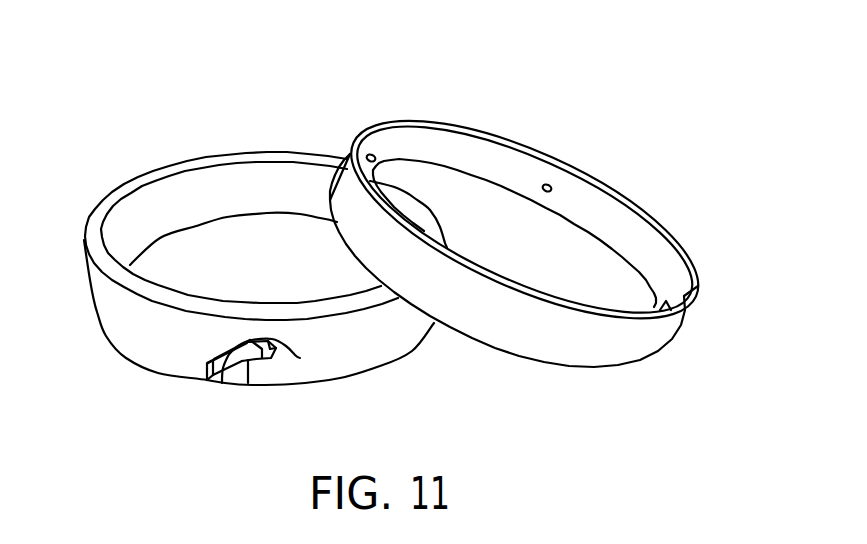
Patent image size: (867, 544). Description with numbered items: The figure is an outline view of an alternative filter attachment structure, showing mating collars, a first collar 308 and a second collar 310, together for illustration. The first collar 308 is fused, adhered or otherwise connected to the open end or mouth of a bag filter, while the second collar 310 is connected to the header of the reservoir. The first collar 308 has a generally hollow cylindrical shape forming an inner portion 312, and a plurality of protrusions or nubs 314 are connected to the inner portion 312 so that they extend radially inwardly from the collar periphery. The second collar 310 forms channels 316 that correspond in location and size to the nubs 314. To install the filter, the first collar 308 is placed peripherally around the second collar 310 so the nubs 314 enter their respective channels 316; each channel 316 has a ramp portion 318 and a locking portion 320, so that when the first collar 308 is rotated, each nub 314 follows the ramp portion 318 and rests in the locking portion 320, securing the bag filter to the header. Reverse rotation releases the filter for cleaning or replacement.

The first collar 308 is at (582, 203).
The second collar 310 is at (150, 323).
The inner portion 312 is at (492, 163).
The nubs 314 is at (372, 155).
The channels 316 is at (220, 366).
The ramp portion 318 is at (237, 351).
The locking portion 320 is at (300, 358).